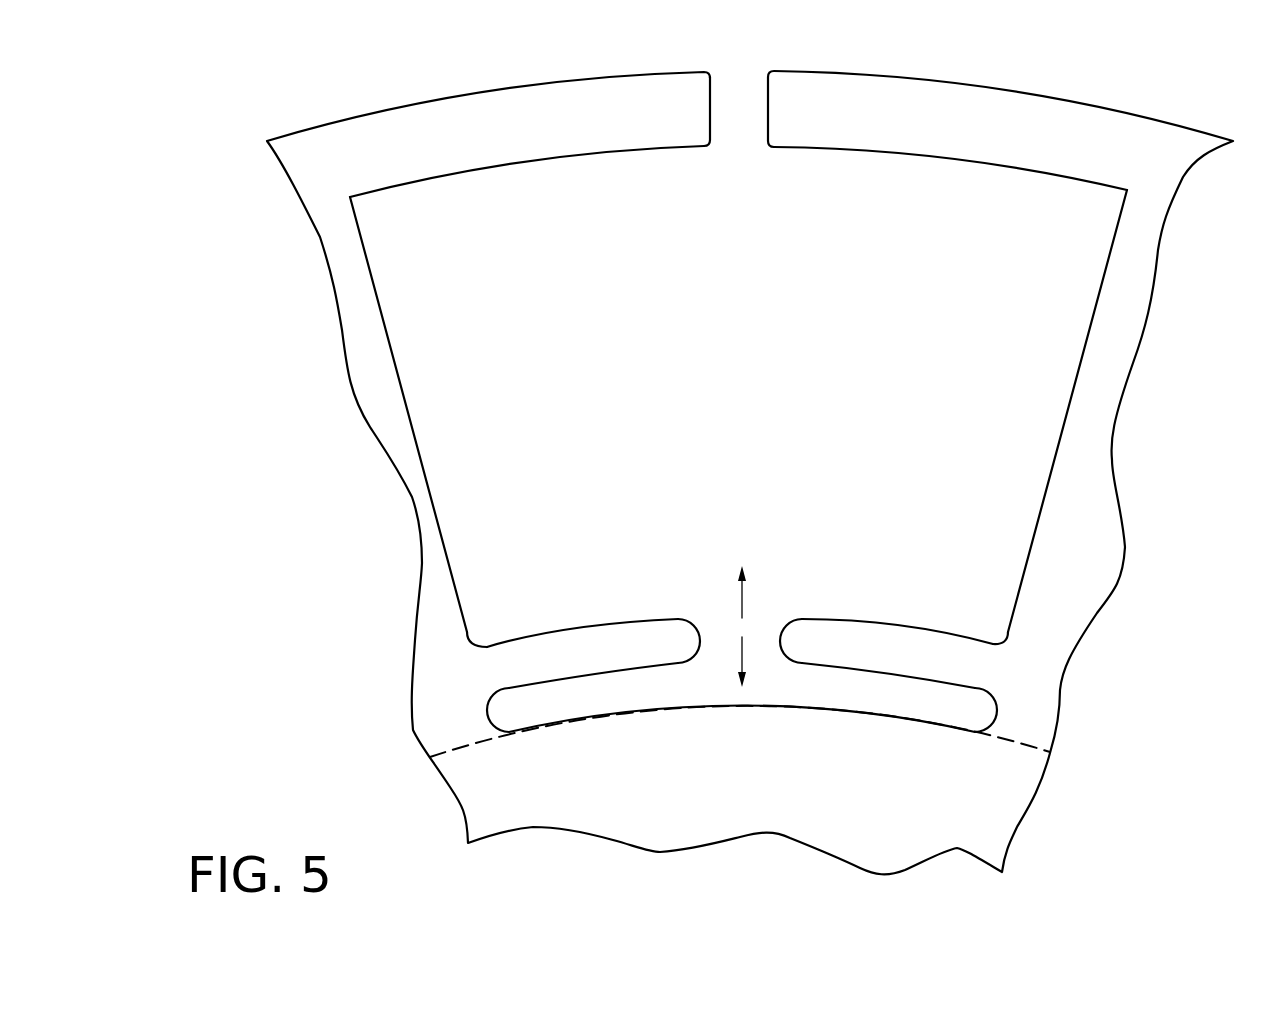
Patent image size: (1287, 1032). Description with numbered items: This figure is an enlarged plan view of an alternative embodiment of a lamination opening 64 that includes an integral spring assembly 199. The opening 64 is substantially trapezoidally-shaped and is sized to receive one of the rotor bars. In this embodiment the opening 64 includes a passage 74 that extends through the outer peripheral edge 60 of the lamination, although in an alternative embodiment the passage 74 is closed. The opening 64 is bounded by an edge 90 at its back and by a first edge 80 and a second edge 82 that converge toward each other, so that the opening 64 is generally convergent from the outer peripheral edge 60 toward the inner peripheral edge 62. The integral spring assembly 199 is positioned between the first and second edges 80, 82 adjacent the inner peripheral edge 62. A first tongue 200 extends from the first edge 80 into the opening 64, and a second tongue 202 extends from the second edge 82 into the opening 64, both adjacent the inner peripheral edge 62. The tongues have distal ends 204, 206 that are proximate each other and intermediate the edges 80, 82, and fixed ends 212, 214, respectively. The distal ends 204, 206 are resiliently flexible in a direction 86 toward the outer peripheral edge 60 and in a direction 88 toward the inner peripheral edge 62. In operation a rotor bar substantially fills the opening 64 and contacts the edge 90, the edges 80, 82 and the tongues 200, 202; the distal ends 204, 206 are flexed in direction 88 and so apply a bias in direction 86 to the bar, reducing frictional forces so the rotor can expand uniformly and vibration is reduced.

The outer peripheral edge 60 is at (1145, 115).
The inner peripheral edge 62 is at (1027, 746).
The lamination opening 64 is at (738, 389).
The passage 74 is at (740, 120).
The first edge 80 is at (405, 395).
The second edge 82 is at (1078, 378).
The direction towards outer peripheral edge 86 is at (735, 597).
The direction towards inner peripheral edge 88 is at (735, 651).
The edge 90 is at (525, 165).
The integral spring assembly 199 is at (751, 617).
The first tongue 200 is at (583, 612).
The second tongue 202 is at (928, 652).
The distal end of first tongue 204 is at (680, 640).
The distal end of second tongue 206 is at (894, 619).
The fixed end of first tongue 212 is at (477, 669).
The fixed end of second tongue 214 is at (997, 665).